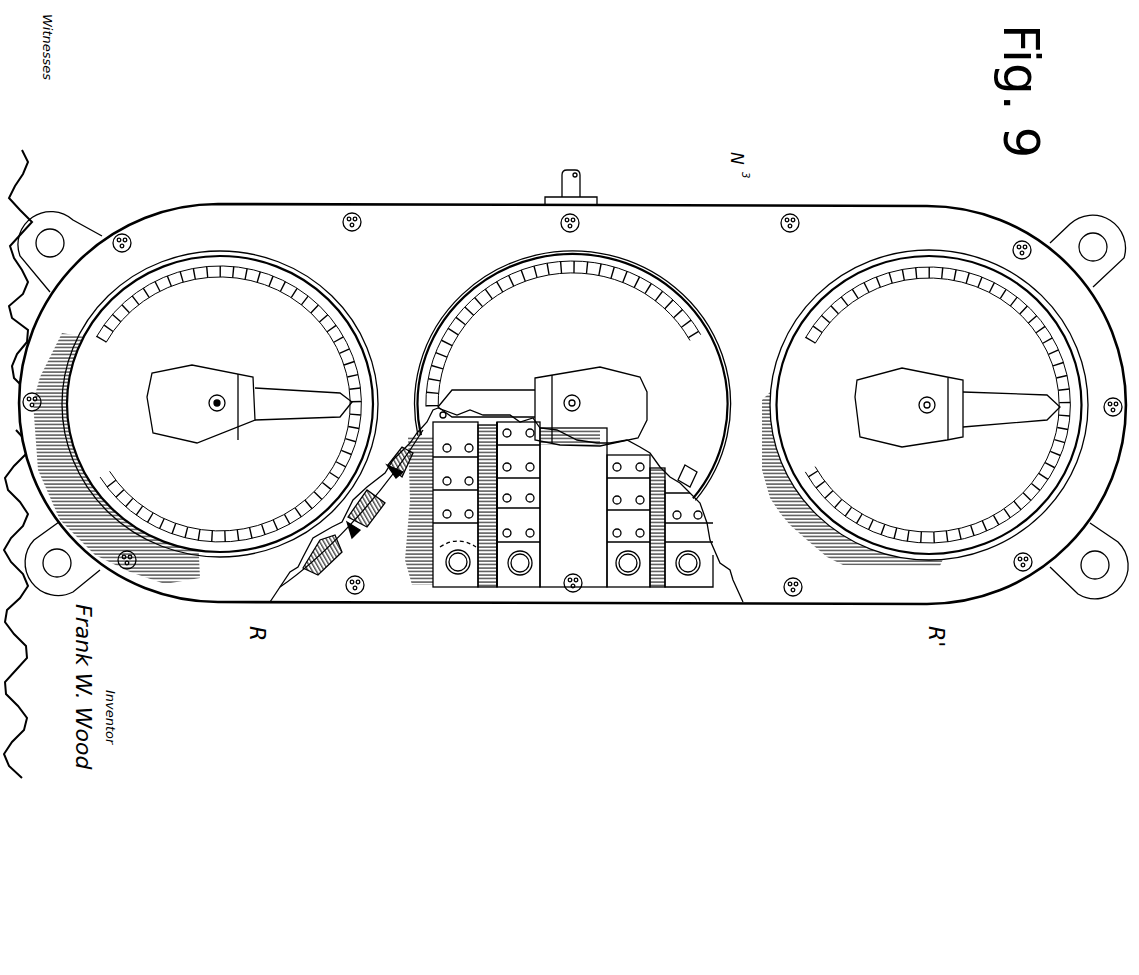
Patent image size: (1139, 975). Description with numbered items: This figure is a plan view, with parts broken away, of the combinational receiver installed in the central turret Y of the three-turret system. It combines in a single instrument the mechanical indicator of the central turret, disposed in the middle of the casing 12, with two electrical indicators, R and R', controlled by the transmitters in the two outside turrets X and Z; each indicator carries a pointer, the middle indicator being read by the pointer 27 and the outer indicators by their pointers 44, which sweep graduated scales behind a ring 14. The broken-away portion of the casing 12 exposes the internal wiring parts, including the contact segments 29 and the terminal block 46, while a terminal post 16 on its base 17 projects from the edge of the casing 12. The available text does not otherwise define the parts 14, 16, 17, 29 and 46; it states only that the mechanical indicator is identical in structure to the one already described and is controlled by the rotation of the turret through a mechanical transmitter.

The front plate / casing 12 is at (572, 404).
The bezel ring of middle instrument 14 is at (727, 455).
The terminal post 16 is at (577, 177).
The terminal base 17 is at (547, 196).
The pointer of middle instrument 27 is at (542, 406).
The contact segments 29 is at (394, 524).
The pointer 44 is at (603, 406).
The terminal block 46 is at (583, 507).